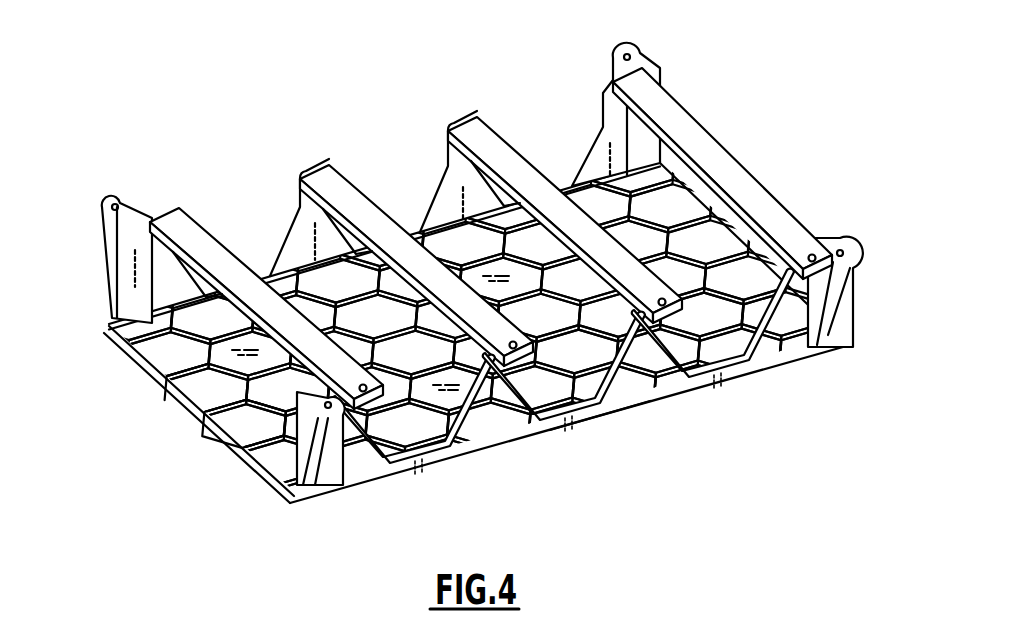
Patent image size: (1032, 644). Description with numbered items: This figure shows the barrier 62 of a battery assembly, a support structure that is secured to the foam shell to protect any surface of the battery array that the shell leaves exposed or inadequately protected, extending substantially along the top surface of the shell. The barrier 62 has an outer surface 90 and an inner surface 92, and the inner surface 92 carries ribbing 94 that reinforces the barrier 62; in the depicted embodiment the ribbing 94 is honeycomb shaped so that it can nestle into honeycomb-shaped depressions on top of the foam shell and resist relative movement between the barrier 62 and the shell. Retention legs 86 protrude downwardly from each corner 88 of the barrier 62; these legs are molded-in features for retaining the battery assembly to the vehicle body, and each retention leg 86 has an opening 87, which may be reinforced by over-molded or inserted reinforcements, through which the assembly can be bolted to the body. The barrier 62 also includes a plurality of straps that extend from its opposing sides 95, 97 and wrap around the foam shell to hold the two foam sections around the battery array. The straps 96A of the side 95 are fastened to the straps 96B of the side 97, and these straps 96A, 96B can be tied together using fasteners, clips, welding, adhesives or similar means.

The barrier 62 is at (352, 126).
The retention legs 86 is at (108, 262).
The openings 87 is at (104, 207).
The corner 88 is at (106, 333).
The outer surface 90 is at (192, 415).
The inner surface 92 is at (248, 423).
The ribbing 94 is at (192, 390).
The side 95 is at (558, 186).
The straps 96A is at (178, 214).
The straps 96B is at (500, 408).
The side 97 is at (587, 420).